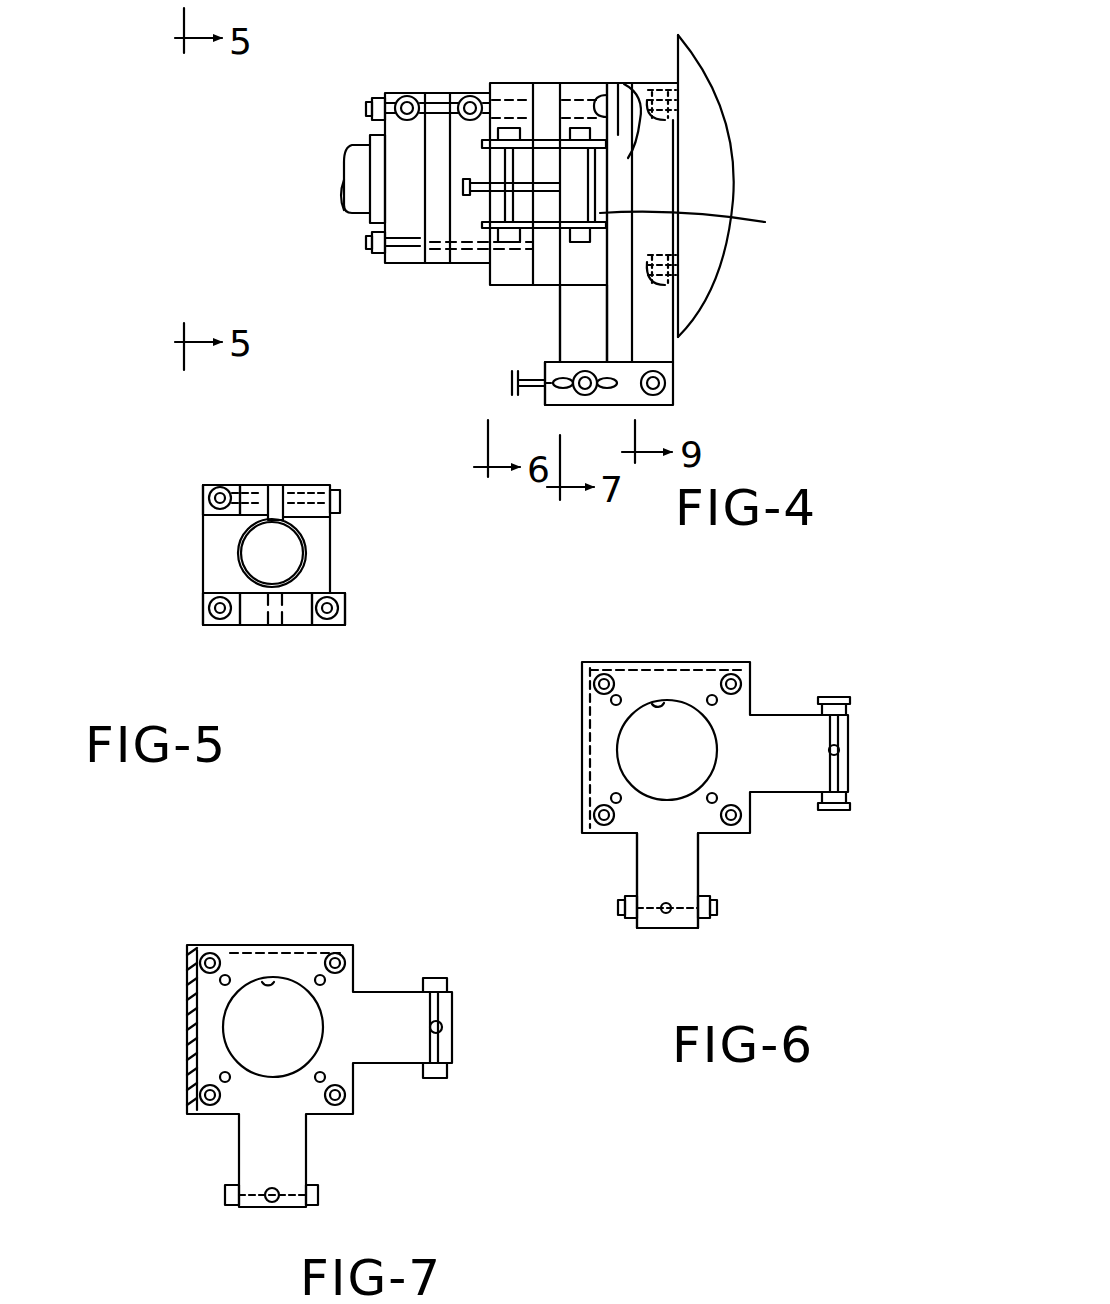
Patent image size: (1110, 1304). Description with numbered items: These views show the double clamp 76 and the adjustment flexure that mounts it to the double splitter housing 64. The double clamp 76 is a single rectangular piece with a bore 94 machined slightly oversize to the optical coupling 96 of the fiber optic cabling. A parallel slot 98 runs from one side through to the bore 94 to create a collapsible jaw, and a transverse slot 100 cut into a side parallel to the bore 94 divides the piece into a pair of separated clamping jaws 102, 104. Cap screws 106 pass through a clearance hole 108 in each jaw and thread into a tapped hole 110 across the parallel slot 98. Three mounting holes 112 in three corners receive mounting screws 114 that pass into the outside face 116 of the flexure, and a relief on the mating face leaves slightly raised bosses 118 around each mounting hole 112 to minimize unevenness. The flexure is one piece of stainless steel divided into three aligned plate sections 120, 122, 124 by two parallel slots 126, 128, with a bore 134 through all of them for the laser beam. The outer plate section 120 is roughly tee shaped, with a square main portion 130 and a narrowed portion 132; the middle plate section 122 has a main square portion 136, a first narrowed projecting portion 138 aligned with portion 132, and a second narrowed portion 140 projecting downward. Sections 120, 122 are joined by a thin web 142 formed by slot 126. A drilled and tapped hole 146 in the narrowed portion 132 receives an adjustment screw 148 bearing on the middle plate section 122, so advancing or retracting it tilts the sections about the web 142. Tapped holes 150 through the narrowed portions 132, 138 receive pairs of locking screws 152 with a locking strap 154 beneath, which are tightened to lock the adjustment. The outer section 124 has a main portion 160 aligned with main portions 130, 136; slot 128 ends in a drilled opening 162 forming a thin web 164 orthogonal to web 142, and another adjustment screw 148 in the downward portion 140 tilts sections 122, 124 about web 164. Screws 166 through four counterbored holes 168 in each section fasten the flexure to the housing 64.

In FIG. 4, the double splitter housing 64 is at (735, 87).
In FIG. 4, the double clamp 76 is at (375, 282).
In FIG. 5, the bore 94 is at (287, 565).
In FIG. 4, the optical coupling 96 is at (348, 178).
In FIG. 5, the parallel slot 98 is at (270, 490).
In FIG. 5, the transverse slot 100 is at (275, 626).
In FIG. 4, the clamping jaw 102 is at (396, 88).
In FIG. 5, the clamping jaw 102 is at (228, 456).
In FIG. 4, the clamping jaw 104 is at (465, 95).
In FIG. 4, the cap screws 106 is at (394, 98).
In FIG. 5, the clearance hole 108 is at (315, 505).
In FIG. 5, the tapped hole 110 is at (265, 500).
In FIG. 4, the mounting holes 112 is at (373, 312).
In FIG. 4, the mounting screws 114 is at (366, 111).
In FIG. 5, the mounting screws 114 is at (210, 617).
In FIG. 6, the mounting screws 114 is at (712, 698).
In FIG. 4, the outside face 116 is at (507, 283).
In FIG. 5, the raised bosses 118 is at (198, 507).
In FIG. 4, the outer plate section 120 is at (493, 288).
In FIG. 6, the outer plate section 120 is at (750, 705).
In FIG. 4, the middle plate section 122 is at (496, 382).
In FIG. 7, the middle plate section 122 is at (197, 945).
In FIG. 4, the outer plate section 124 is at (625, 278).
In FIG. 4, the slot 126 is at (557, 288).
In FIG. 4, the slot 128 is at (618, 83).
In FIG. 6, the square main portion 130 is at (625, 680).
In FIG. 6, the narrowed portion 132 is at (795, 730).
In FIG. 6, the bore 134 is at (660, 702).
In FIG. 7, the bore 134 is at (268, 985).
In FIG. 7, the main square portion 136 is at (290, 1097).
In FIG. 7, the first narrowed projecting portion 138 is at (388, 1005).
In FIG. 4, the second narrowed portion 140 is at (660, 350).
In FIG. 6, the second narrowed portion 140 is at (698, 885).
In FIG. 7, the second narrowed portion 140 is at (258, 1157).
In FIG. 6, the thin web 142 is at (582, 750).
In FIG. 7, the thin web 142 is at (187, 1040).
In FIG. 4, the drilled and tapped hole 146 is at (500, 184).
In FIG. 4, the adjustment screw 148 is at (463, 190).
In FIG. 6, the adjustment screw 148 is at (835, 752).
In FIG. 6, the tapped holes 150 is at (870, 750).
In FIG. 4, the locking screws 152 is at (545, 100).
In FIG. 6, the locking screws 152 is at (835, 702).
In FIG. 4, the locking strap 154 is at (640, 216).
In FIG. 6, the locking strap 154 is at (840, 698).
In FIG. 4, the main portion 160 is at (668, 174).
In FIG. 4, the drilled opening 162 is at (600, 107).
In FIG. 6, the thin web 164 is at (662, 695).
In FIG. 4, the screws 166 is at (690, 63).
In FIG. 4, the counterbored holes 168 is at (738, 112).